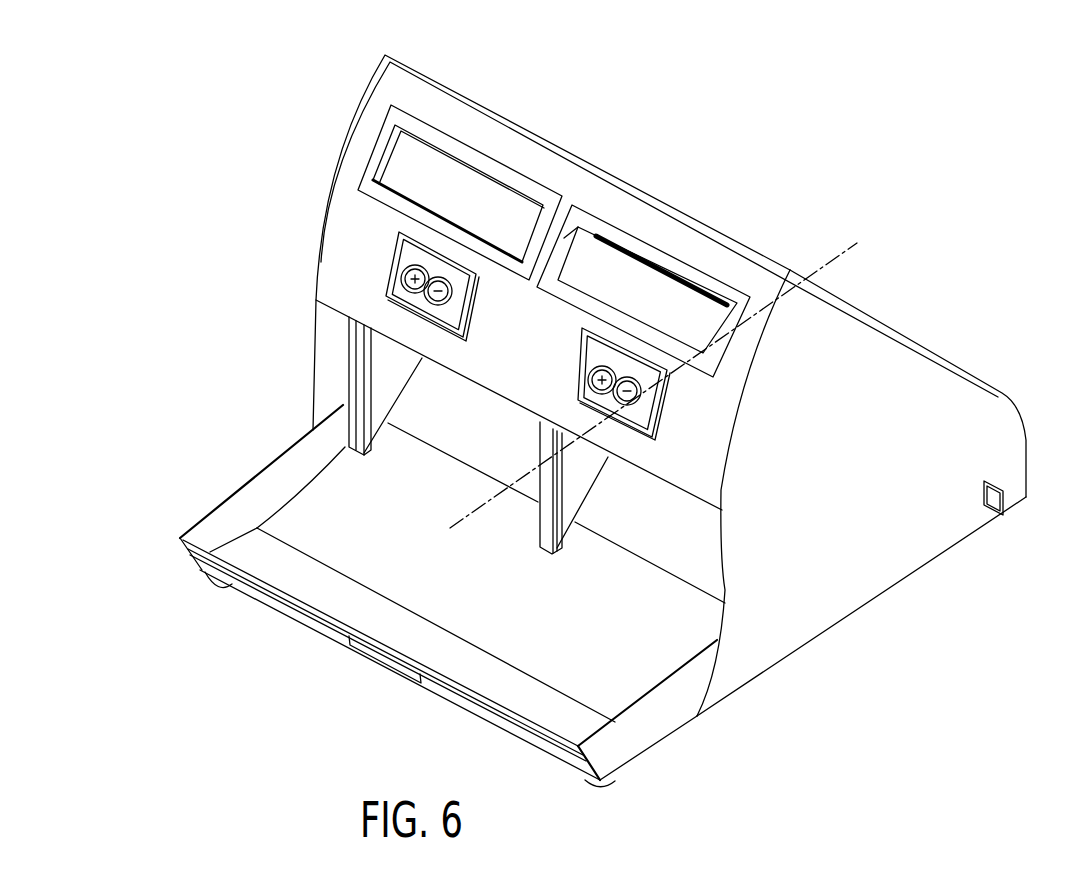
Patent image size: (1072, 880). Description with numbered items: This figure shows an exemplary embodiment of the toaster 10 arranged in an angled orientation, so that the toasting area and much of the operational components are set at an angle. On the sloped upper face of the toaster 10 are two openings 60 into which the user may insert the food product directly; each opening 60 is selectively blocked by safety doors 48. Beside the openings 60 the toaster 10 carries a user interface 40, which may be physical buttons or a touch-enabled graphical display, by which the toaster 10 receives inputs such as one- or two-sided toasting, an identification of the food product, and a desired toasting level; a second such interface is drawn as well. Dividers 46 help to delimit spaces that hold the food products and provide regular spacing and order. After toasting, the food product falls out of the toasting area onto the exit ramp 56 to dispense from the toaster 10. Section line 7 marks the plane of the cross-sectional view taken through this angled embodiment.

The toaster 10 is at (604, 117).
The user interface 40 is at (400, 254).
The dividers 46 is at (647, 405).
The safety doors 48 is at (448, 182).
The exit ramp 56 is at (472, 418).
The opening 60 is at (513, 185).
The section line 7- 7 is at (450, 528).